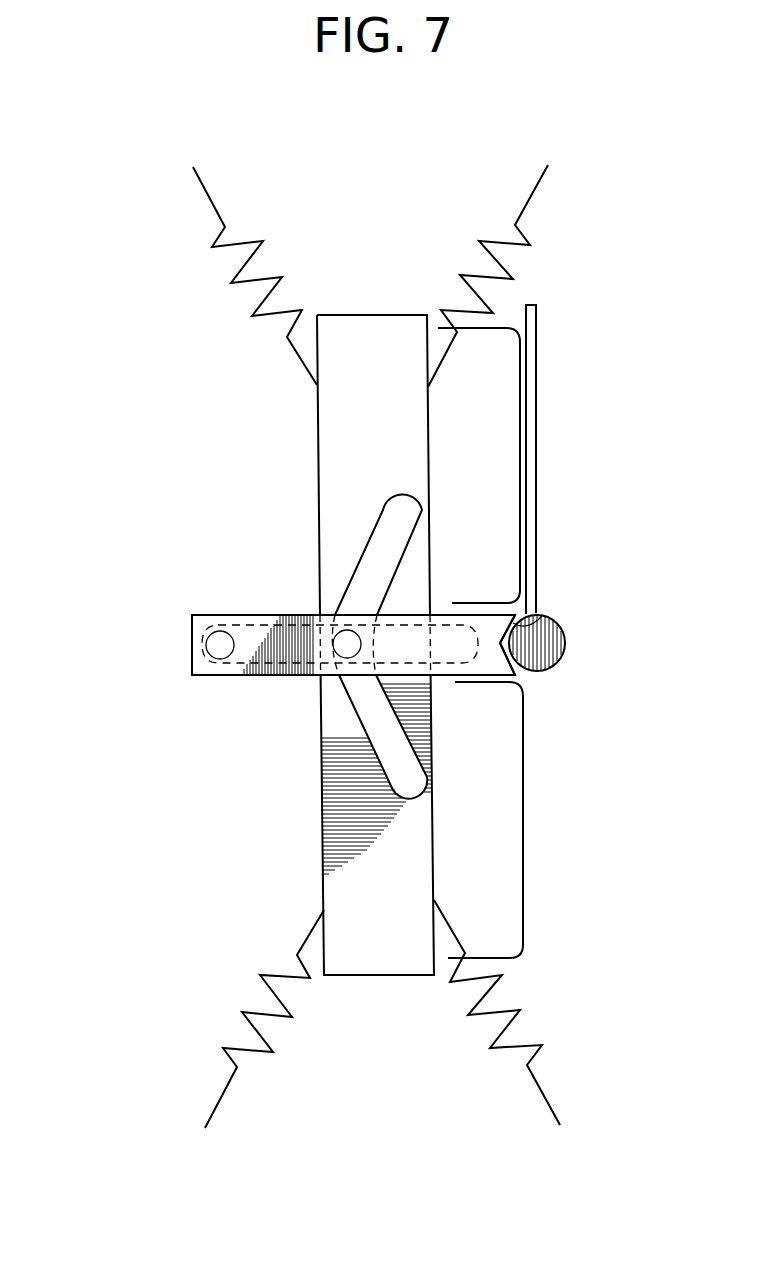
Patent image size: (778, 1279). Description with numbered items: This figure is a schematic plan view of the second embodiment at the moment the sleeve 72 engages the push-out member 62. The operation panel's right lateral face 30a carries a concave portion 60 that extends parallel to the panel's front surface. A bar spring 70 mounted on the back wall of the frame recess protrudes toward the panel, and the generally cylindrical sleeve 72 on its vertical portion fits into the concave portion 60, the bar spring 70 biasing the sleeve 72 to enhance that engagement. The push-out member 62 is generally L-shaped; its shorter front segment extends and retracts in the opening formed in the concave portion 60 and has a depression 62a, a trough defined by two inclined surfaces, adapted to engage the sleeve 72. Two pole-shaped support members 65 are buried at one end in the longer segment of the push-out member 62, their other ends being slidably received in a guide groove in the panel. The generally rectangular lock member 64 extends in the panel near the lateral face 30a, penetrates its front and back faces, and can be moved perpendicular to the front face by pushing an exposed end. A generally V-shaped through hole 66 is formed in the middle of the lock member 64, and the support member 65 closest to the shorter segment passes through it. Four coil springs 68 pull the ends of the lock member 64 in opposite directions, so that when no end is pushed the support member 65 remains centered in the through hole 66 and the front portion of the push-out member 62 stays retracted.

The coil spring 68 is at (243, 264).
The bar spring 70 is at (534, 392).
The depression 62a is at (545, 613).
The sleeve 72 is at (565, 637).
The concave portion 60 is at (522, 688).
The lateral face 30a is at (525, 822).
The through hole 66 is at (373, 555).
The push-out member 62 is at (202, 673).
The support member 65 is at (353, 657).
The lock member 64 is at (377, 893).